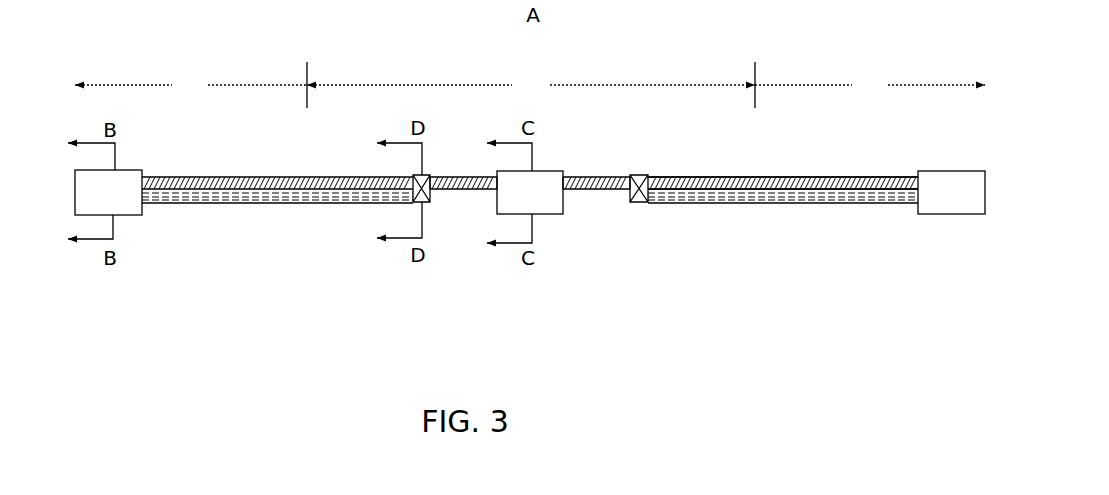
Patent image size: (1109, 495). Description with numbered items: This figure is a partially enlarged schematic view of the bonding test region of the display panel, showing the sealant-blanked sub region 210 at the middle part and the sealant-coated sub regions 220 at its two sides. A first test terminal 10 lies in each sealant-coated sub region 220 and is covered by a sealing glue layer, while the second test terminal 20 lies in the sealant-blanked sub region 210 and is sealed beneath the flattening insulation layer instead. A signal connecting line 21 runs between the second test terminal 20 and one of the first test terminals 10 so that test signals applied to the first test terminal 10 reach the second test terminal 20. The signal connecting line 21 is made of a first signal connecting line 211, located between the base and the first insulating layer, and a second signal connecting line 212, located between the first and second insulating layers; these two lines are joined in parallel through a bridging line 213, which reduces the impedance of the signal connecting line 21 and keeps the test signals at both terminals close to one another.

The first test terminal 10 is at (124, 202).
The second test terminal 20 is at (548, 205).
The signal connecting line 21 is at (783, 261).
The first signal connecting line 211 is at (713, 282).
The second signal connecting line 212 is at (738, 193).
The bridging line 213 is at (423, 205).
The sealant-blanked sub region 210 is at (531, 85).
The sealant-coated sub region 220 is at (530, 85).